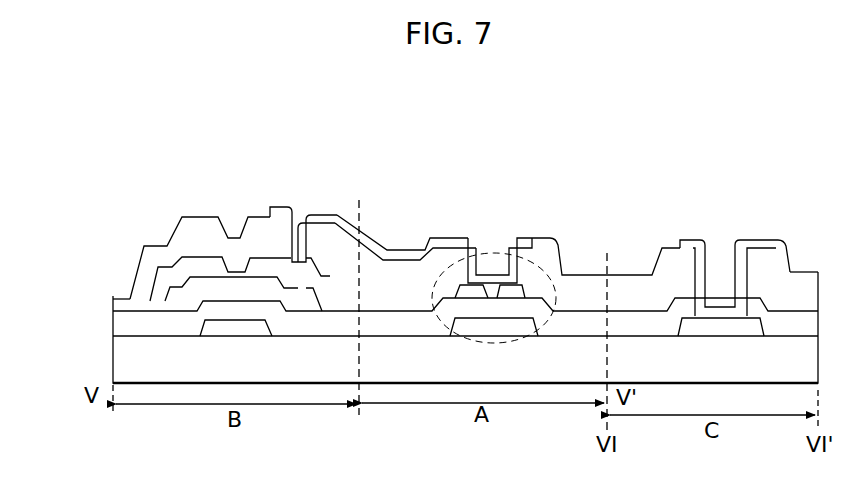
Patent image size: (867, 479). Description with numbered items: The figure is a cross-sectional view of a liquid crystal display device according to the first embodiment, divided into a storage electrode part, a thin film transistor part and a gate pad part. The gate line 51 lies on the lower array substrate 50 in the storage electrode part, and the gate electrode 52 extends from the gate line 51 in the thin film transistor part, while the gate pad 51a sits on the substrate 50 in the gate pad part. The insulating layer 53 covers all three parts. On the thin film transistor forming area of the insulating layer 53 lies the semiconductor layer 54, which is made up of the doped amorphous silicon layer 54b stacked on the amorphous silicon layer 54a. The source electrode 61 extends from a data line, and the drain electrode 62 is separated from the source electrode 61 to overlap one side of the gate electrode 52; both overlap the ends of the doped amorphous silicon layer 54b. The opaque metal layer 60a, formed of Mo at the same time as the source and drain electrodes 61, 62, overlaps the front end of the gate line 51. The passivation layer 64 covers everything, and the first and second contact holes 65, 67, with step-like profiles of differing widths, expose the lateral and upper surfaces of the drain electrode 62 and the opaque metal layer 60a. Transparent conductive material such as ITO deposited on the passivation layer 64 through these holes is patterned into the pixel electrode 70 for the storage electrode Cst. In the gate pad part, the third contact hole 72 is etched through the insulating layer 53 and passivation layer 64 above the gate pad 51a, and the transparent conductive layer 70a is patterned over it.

The lower array substrate 50 is at (120, 359).
The gate line 51 is at (482, 332).
The gate pad 51a is at (735, 332).
The gate electrode 52 is at (235, 333).
The insulating layer 53 is at (120, 323).
The semiconductor layer 54 is at (78, 272).
The amorphous silicon layer 54a is at (174, 297).
The doped amorphous silicon layer 54b is at (178, 283).
The opaque metal layer 60a is at (527, 287).
The source electrode 61 is at (203, 262).
The drain electrode 62 is at (318, 287).
The passivation layer 64 is at (447, 237).
The first contact hole 65 is at (492, 242).
The second contact hole 67 is at (300, 215).
The pixel electrode 70 is at (393, 252).
The transparent conductive layer 70a is at (758, 235).
The third contact hole 72 is at (722, 256).
The storage electrode Cst is at (540, 270).